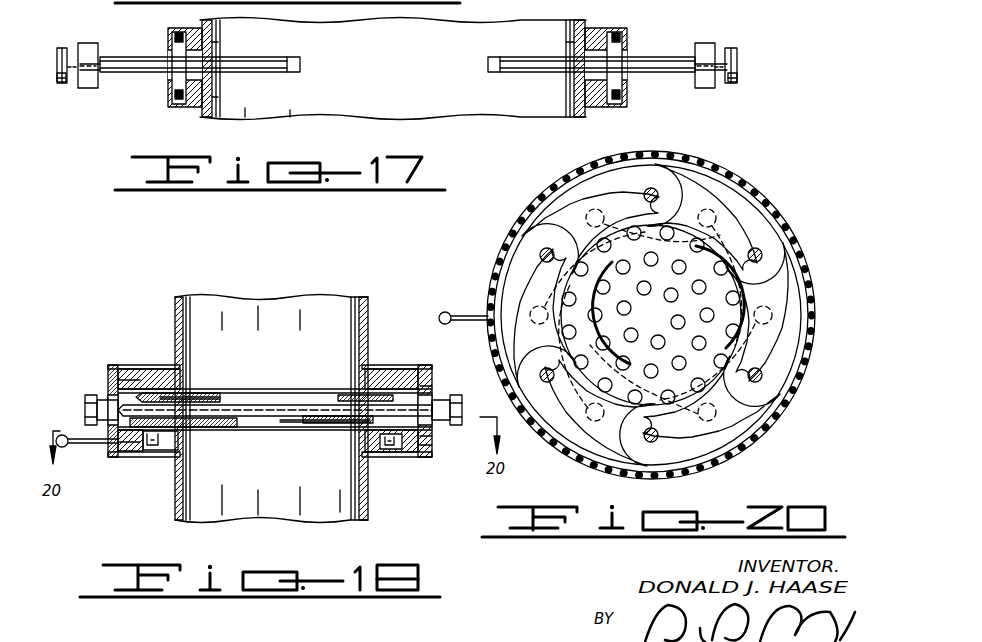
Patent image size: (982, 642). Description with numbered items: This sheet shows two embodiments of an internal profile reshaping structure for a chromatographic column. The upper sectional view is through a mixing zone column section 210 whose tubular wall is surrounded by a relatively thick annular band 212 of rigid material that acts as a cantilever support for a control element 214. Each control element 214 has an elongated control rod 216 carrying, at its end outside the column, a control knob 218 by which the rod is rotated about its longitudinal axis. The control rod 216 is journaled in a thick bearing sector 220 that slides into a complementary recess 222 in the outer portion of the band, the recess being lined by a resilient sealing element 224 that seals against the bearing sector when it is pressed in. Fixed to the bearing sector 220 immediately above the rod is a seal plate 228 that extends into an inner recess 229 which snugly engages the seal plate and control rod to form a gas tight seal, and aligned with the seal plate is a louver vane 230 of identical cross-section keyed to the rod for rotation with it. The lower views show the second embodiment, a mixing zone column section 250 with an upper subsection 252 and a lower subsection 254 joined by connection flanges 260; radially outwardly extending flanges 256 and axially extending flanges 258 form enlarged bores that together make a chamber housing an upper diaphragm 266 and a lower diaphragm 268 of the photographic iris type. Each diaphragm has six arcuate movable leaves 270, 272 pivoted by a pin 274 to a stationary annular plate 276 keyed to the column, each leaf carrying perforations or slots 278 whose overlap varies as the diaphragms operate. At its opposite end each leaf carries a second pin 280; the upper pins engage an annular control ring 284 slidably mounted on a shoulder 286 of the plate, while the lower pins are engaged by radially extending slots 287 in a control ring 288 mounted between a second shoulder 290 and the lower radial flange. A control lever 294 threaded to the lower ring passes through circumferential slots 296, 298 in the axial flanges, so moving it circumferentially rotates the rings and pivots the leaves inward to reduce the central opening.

In FIG. 17, the mixing zone column section 210 is at (205, 108).
In FIG. 17, the annular band 212 is at (601, 107).
In FIG. 17, the control element 214 is at (702, 32).
In FIG. 17, the control rod 216 is at (73, 58).
In FIG. 17, the control knob 218 is at (62, 84).
In FIG. 17, the bearing sector 220 is at (93, 44).
In FIG. 17, the recess 222 is at (172, 86).
In FIG. 17, the resilient sealing element 224 is at (178, 32).
In FIG. 17, the seal plate 228 is at (112, 58).
In FIG. 17, the recess 229 is at (211, 42).
In FIG. 17, the louver vane 230 is at (263, 57).
In FIG. 19, the mixing zone column section 250 is at (178, 312).
In FIG. 19, the upper subsection 252 is at (370, 300).
In FIG. 19, the lower subsection 254 is at (370, 503).
In FIG. 19, the radially outwardly extending flange 256 is at (380, 370).
In FIG. 19, the axially extending flange 258 is at (433, 386).
In FIG. 20, the axially extending flange 258 is at (783, 228).
In FIG. 19, the connection flange 260 is at (88, 404).
In FIG. 19, the upper diaphragm 266 is at (133, 366).
In FIG. 19, the lower diaphragm 268 is at (127, 455).
In FIG. 19, the movable leaves of the upper diaphragm 270 is at (220, 398).
In FIG. 19, the movable leaves of the lower diaphragm 272 is at (238, 424).
In FIG. 20, the movable leaves of the lower diaphragm 272 is at (708, 196).
In FIG. 19, the pin 274 is at (210, 428).
In FIG. 20, the pin 274 is at (652, 188).
In FIG. 19, the annular plate 276 is at (150, 378).
In FIG. 20, the perforations or slots 278 is at (590, 222).
In FIG. 19, the second pin 280 is at (160, 450).
In FIG. 20, the second pin 280 is at (736, 212).
In FIG. 19, the control ring 284 is at (180, 400).
In FIG. 19, the shoulder 286 is at (110, 392).
In FIG. 19, the radially extending slots 287 is at (220, 430).
In FIG. 20, the radially extending slots 287 is at (547, 334).
In FIG. 19, the control ring 288 is at (425, 448).
In FIG. 20, the control ring 288 is at (748, 415).
In FIG. 19, the second shoulder 290 is at (431, 372).
In FIG. 20, the second shoulder 290 is at (814, 270).
In FIG. 19, the control lever 294 is at (72, 422).
In FIG. 20, the control lever 294 is at (444, 312).
In FIG. 19, the circumferential slot 296 is at (108, 374).
In FIG. 19, the circumferential slot 298 is at (110, 458).
In FIG. 20, the circumferential slot 298 is at (553, 440).